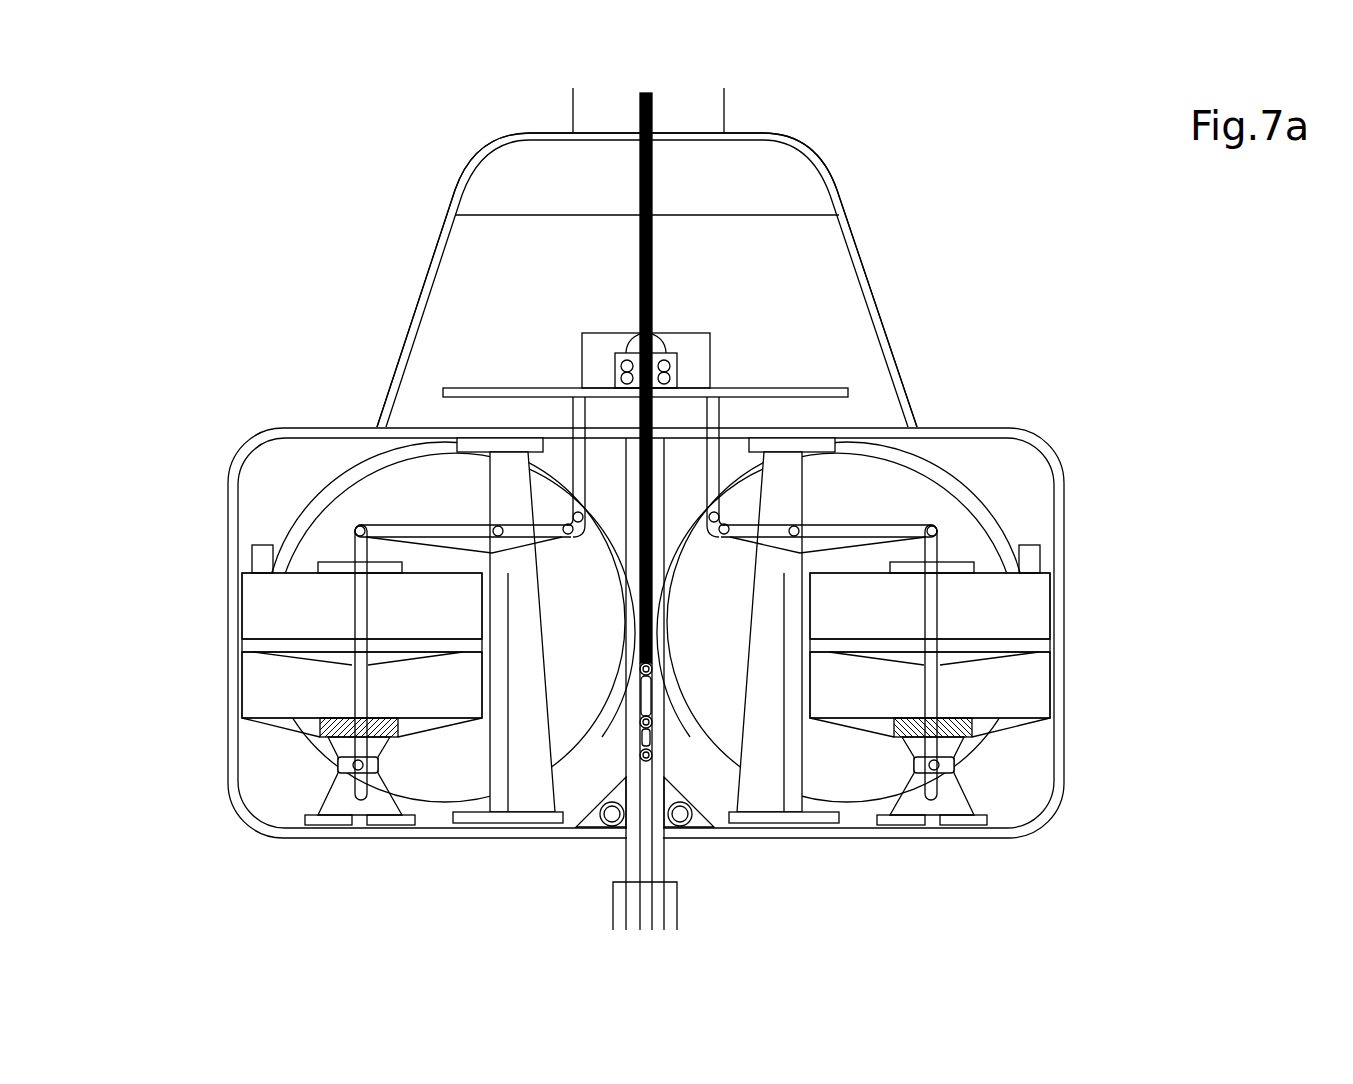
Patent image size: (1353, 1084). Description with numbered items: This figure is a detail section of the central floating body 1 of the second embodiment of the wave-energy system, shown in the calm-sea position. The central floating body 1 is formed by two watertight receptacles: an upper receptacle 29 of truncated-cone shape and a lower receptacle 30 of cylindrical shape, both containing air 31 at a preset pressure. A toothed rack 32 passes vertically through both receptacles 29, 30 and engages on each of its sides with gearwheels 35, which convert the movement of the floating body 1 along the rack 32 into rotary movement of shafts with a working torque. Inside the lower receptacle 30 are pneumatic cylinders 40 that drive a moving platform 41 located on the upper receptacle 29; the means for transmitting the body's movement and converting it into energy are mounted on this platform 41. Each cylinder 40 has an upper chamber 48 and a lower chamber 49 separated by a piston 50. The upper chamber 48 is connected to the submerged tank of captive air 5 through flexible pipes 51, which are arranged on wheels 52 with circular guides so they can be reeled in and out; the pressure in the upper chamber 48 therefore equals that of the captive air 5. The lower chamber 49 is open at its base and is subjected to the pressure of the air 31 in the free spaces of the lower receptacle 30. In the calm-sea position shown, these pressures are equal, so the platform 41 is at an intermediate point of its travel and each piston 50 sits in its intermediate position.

The central floating body 1 is at (333, 295).
The captive air 5 is at (297, 597).
The upper receptacle 29 is at (863, 253).
The lower receptacle 30 is at (1065, 775).
The air 31 is at (453, 693).
The toothed rack 32 is at (640, 273).
The gearwheel 35 is at (610, 358).
The pneumatic cylinder 40 is at (260, 668).
The moving platform 41 is at (443, 393).
The upper chamber 48 is at (263, 613).
The lower chamber 49 is at (270, 697).
The piston 50 is at (250, 643).
The flexible pipe 51 is at (603, 801).
The wheel 52 is at (383, 490).